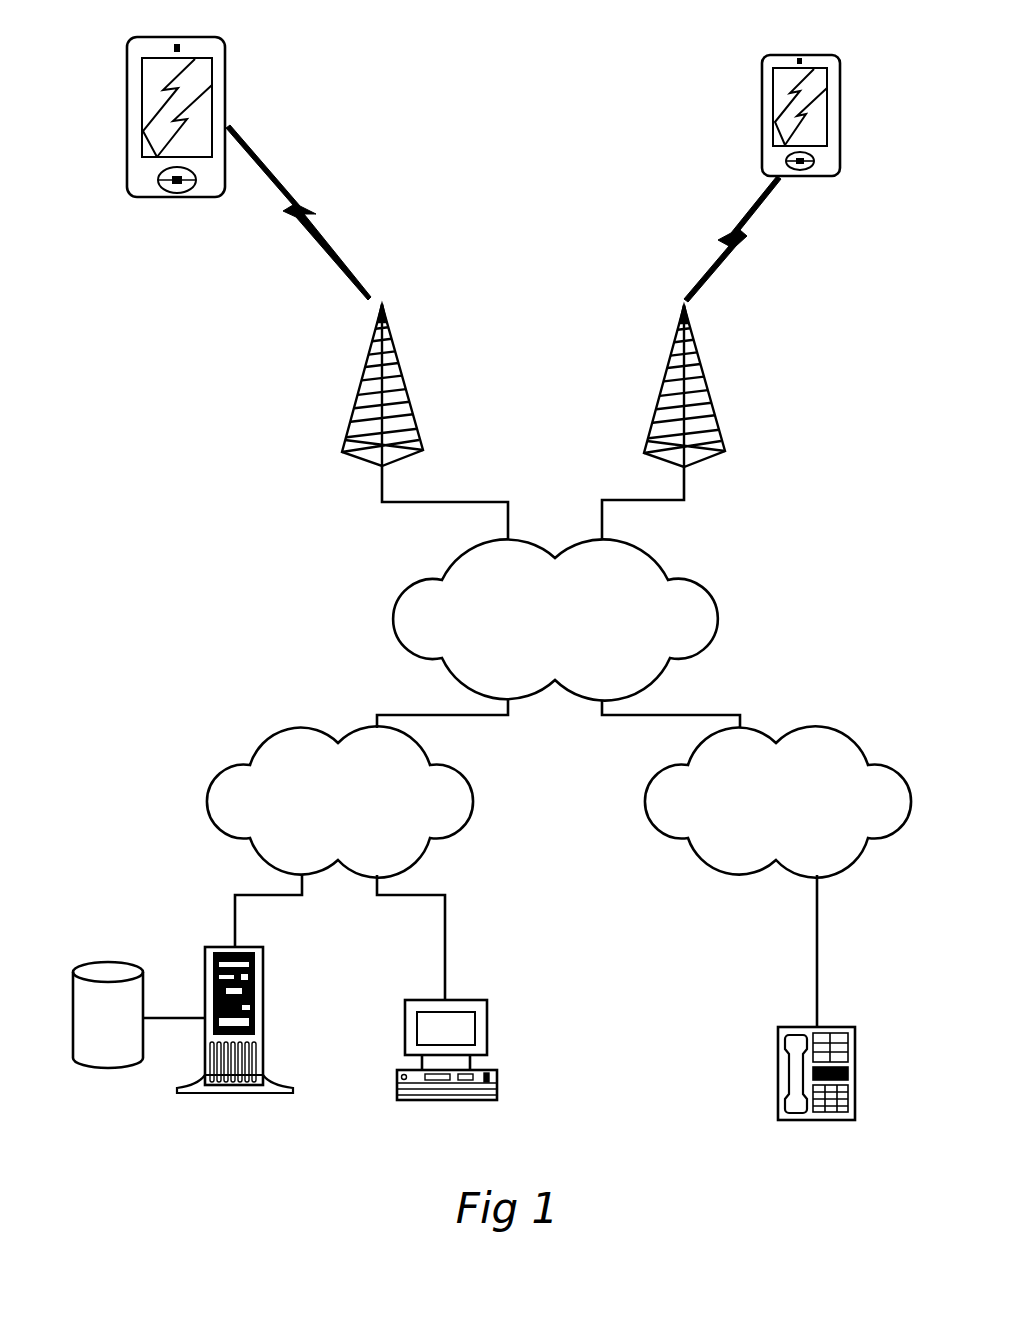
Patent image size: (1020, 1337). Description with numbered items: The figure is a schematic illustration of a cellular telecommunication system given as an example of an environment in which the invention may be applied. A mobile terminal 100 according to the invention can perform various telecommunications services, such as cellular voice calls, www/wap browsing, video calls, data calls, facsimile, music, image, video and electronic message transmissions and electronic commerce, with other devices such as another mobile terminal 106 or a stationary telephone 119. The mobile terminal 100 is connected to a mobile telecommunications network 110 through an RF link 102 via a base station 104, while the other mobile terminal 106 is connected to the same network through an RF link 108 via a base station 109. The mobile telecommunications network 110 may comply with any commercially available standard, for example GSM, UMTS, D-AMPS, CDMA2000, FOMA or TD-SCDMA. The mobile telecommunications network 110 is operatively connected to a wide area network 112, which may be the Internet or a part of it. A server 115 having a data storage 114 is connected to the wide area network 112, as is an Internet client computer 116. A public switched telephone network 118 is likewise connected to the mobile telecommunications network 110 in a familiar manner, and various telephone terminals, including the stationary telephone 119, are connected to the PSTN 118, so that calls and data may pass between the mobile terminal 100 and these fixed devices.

The mobile terminal 100 is at (123, 90).
The RF link 102 is at (303, 196).
The base station 104 is at (388, 392).
The mobile terminal 106 is at (790, 53).
The RF link 108 is at (713, 230).
The base station 109 is at (672, 362).
The mobile telecommunications network 110 is at (537, 586).
The wide area network 112 is at (322, 783).
The data storage 114 is at (100, 968).
The server 115 is at (205, 990).
The Internet client computer 116 is at (468, 1000).
The public switched telephone network (PSTN) 118 is at (760, 799).
The stationary telephone 119 is at (778, 1053).